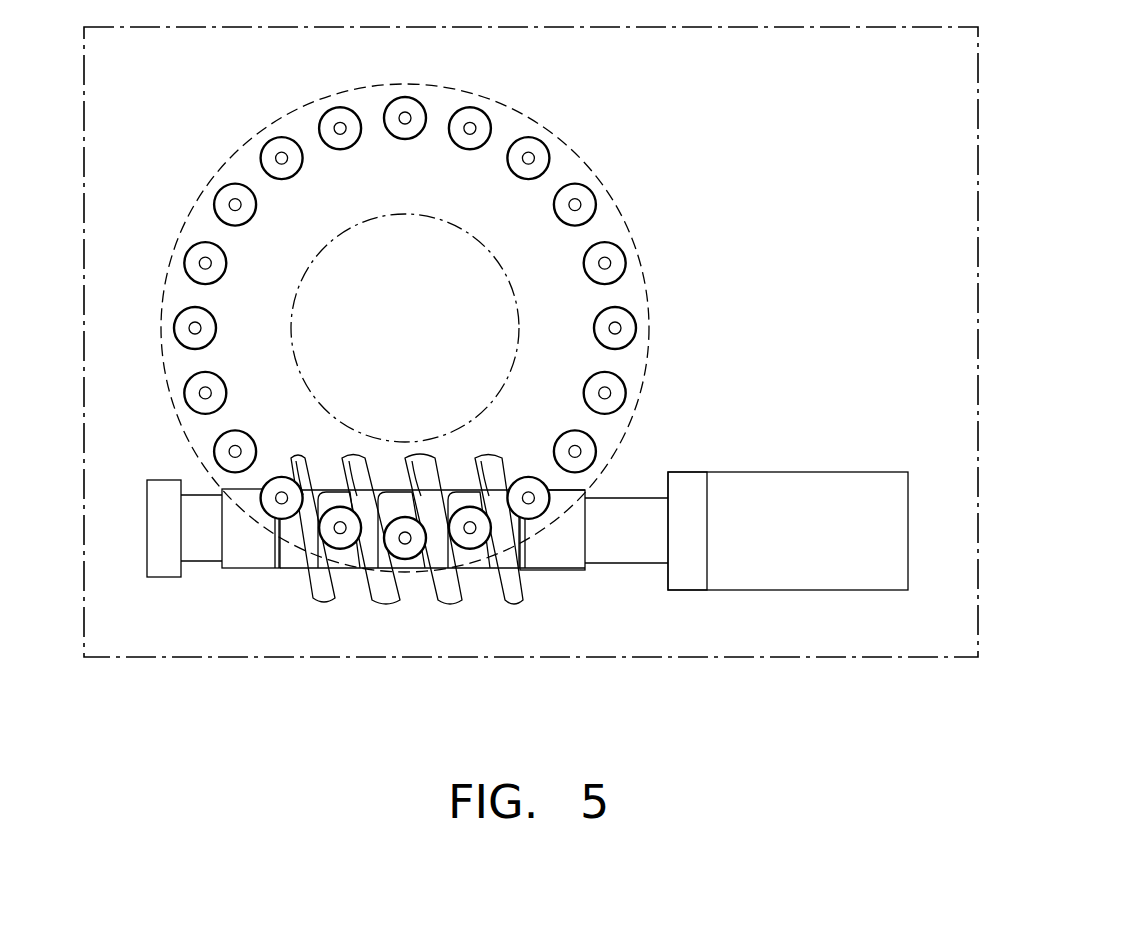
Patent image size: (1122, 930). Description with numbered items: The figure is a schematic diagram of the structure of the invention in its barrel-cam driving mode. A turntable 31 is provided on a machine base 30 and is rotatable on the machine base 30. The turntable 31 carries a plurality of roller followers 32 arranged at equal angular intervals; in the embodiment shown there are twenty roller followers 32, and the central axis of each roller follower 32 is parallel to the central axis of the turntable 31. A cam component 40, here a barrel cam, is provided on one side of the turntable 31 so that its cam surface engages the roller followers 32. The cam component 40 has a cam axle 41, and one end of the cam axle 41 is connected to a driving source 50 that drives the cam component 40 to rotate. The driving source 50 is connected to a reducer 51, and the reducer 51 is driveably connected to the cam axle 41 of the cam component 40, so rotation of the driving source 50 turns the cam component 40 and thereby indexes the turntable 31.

The machine base 30 is at (978, 175).
The turntable 31 is at (460, 328).
The roller follower 32 is at (633, 316).
The cam component 40 is at (250, 571).
The cam axle 41 is at (628, 565).
The driving source 50 is at (808, 590).
The reducer 51 is at (688, 590).